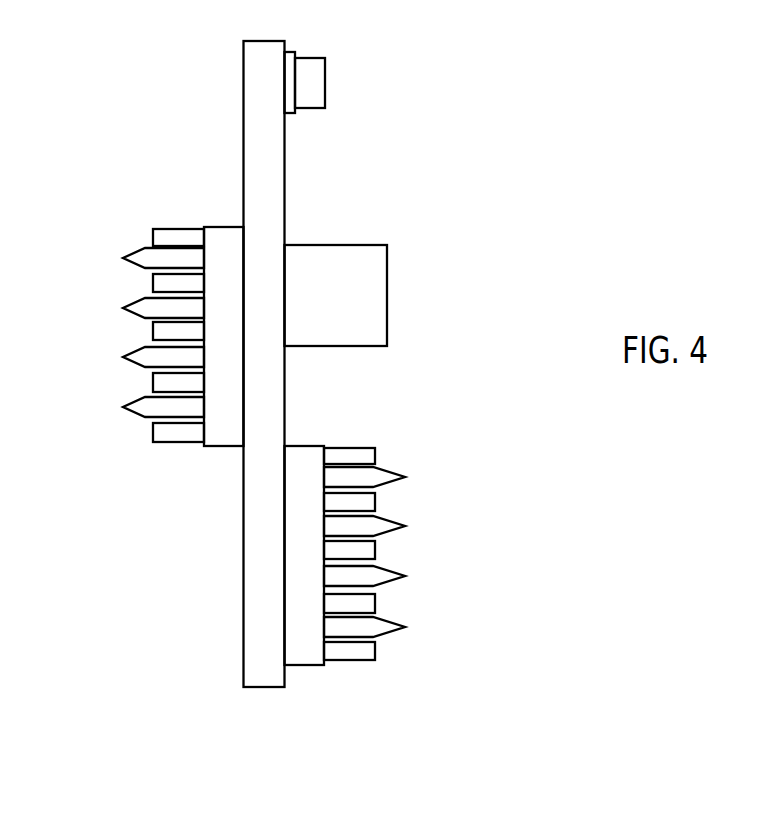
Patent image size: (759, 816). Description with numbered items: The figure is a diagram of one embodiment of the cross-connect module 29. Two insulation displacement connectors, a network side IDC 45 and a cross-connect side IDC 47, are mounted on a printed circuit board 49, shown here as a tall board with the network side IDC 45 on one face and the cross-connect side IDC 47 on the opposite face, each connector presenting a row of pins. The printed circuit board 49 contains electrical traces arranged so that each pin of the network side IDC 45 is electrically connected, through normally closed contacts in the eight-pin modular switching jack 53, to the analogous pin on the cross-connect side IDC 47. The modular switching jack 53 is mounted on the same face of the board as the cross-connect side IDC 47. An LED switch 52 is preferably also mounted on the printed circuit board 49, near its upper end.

The cross-connect module 29 is at (530, 568).
The network side insulation displacement connector 45 is at (223, 226).
The cross-connect side insulation displacement connector 47 is at (305, 446).
The printed circuit board 49 is at (263, 687).
The LED switch 52 is at (325, 83).
The 8-pin modular switching jack 53 is at (342, 245).